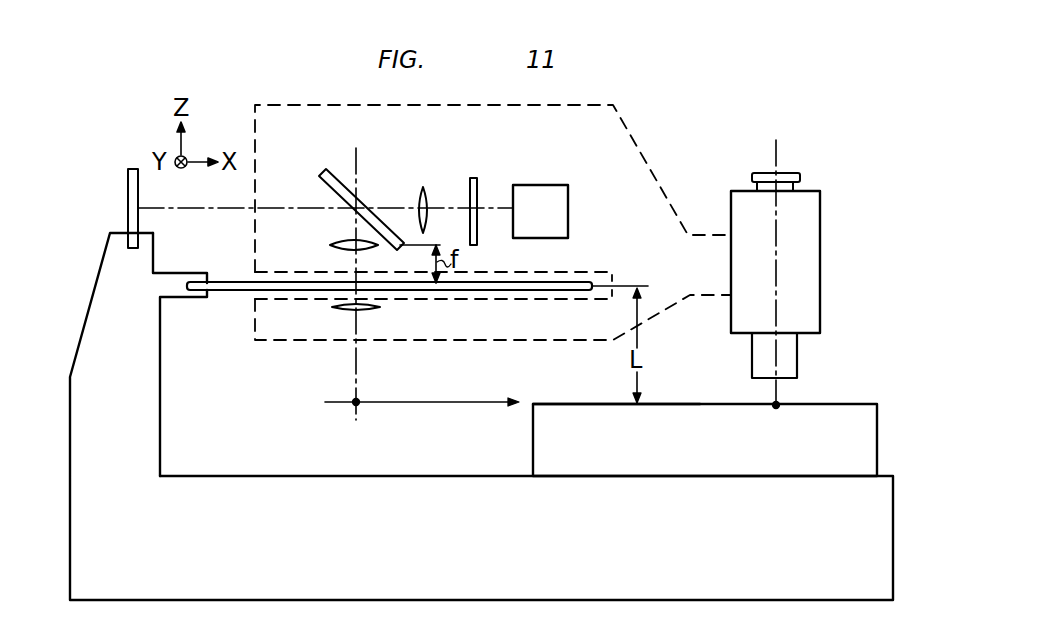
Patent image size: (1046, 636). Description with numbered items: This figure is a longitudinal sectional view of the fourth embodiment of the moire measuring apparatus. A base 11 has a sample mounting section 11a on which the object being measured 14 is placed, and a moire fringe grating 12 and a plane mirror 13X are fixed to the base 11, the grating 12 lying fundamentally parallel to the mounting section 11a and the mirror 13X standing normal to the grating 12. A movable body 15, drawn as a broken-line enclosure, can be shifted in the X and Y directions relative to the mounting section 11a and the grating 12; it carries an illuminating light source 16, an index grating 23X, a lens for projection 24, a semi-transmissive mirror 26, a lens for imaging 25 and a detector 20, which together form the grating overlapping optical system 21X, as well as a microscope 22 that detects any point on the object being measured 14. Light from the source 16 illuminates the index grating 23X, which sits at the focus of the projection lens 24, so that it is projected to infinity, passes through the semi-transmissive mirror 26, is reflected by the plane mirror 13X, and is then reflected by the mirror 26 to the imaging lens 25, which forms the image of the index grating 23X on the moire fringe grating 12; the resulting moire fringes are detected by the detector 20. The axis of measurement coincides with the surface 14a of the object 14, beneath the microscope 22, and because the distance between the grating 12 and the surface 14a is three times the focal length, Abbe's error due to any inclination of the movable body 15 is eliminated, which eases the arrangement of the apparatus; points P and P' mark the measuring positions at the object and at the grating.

The base 11 is at (284, 598).
The sample mounting section 11a is at (274, 475).
The moire fringe grating 12 is at (231, 282).
The plane mirror 13X is at (127, 173).
The object being measured 14 is at (860, 408).
The surface of the object being measured 14a is at (560, 404).
The movable body 15 is at (290, 104).
The illuminating light source 16 is at (558, 185).
The detector 20 is at (380, 307).
The grating overlapping optical system 21X is at (625, 158).
The microscope 22 is at (822, 228).
The index grating 23X is at (484, 186).
The lens for projection 24 is at (424, 187).
The lens for imaging 25 is at (328, 247).
The semi-transmissive mirror 26 is at (330, 170).
The machining point P is at (800, 383).
The reference point P' is at (422, 382).